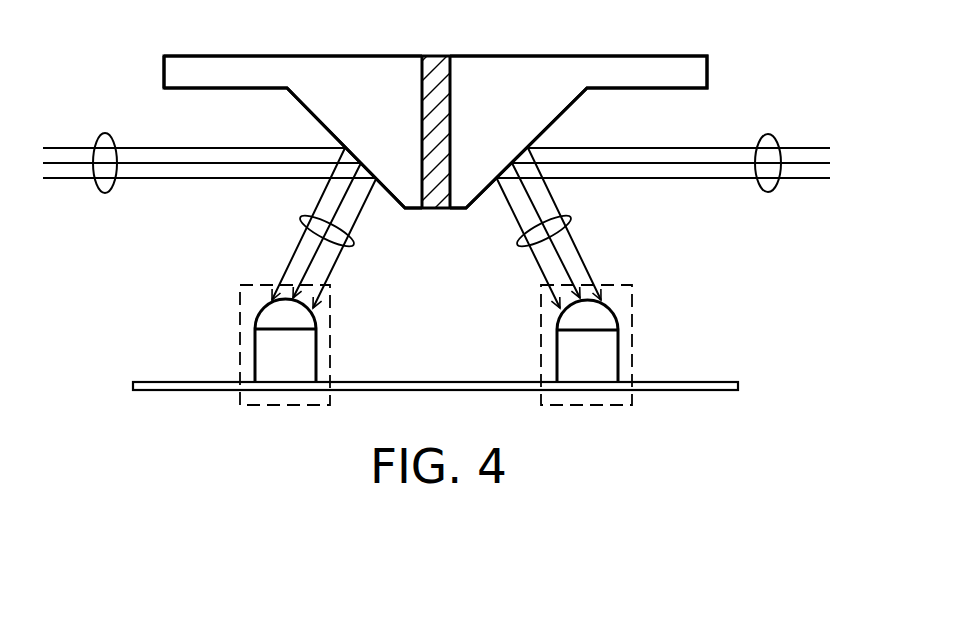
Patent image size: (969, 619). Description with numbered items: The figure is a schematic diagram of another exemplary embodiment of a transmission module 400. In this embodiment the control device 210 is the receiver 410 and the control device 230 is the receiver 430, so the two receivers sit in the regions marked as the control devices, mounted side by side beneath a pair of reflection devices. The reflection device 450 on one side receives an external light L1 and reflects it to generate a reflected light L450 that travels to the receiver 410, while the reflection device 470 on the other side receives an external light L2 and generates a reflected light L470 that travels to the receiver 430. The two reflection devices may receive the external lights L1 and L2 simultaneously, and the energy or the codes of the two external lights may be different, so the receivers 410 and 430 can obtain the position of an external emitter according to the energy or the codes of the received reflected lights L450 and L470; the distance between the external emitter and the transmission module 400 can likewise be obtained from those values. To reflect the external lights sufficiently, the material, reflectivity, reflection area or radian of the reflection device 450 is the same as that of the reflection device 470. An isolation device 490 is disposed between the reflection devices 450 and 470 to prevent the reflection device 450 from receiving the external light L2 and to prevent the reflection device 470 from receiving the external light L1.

The transmission module 400 is at (738, 57).
The reflection device 450 is at (528, 78).
The reflection device 470 is at (344, 78).
The isolation device 490 is at (434, 73).
The control device 210 is at (612, 285).
The control device 230 is at (263, 285).
The receiver 410 is at (618, 352).
The receiver 430 is at (253, 355).
The external light L1 is at (767, 193).
The external light L2 is at (104, 193).
The reflected light L450 is at (575, 213).
The reflected light L470 is at (302, 220).